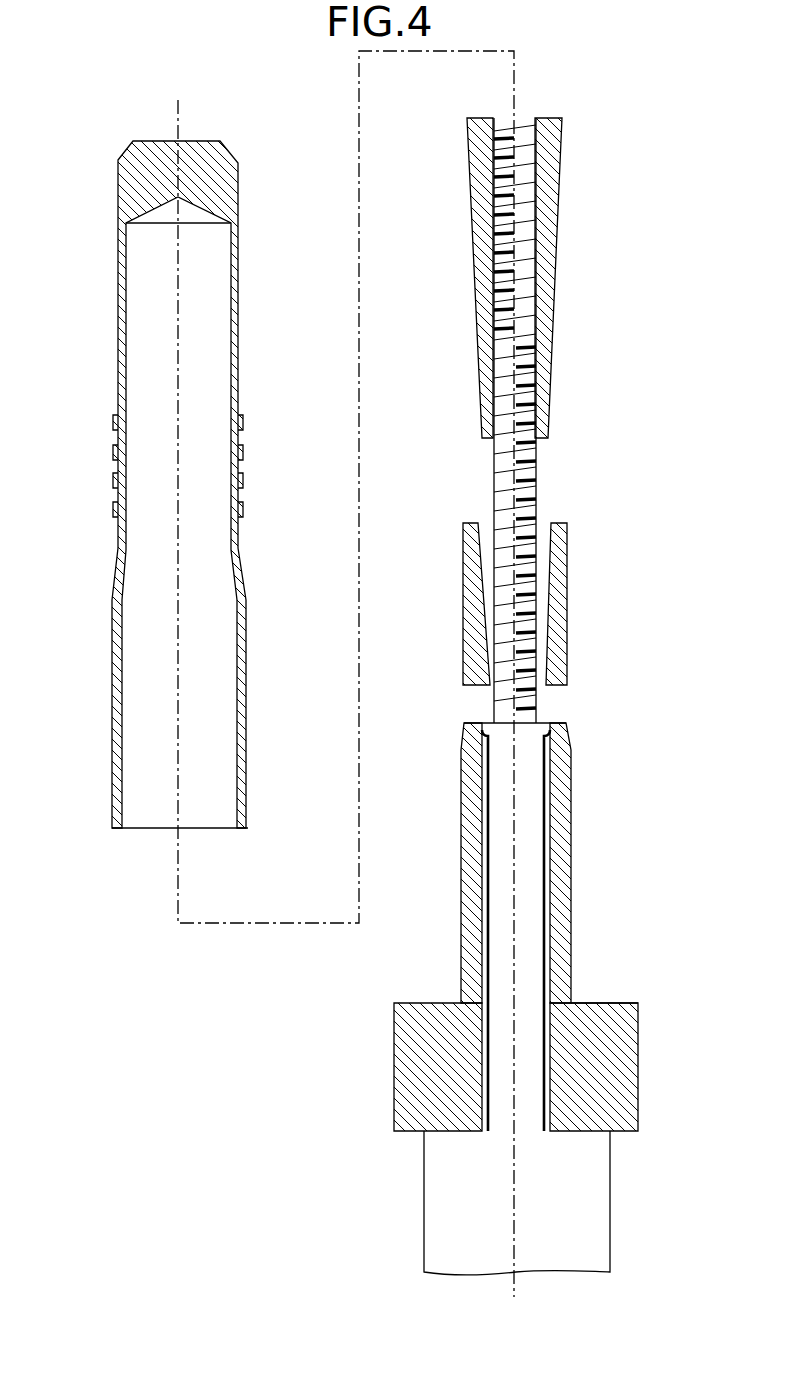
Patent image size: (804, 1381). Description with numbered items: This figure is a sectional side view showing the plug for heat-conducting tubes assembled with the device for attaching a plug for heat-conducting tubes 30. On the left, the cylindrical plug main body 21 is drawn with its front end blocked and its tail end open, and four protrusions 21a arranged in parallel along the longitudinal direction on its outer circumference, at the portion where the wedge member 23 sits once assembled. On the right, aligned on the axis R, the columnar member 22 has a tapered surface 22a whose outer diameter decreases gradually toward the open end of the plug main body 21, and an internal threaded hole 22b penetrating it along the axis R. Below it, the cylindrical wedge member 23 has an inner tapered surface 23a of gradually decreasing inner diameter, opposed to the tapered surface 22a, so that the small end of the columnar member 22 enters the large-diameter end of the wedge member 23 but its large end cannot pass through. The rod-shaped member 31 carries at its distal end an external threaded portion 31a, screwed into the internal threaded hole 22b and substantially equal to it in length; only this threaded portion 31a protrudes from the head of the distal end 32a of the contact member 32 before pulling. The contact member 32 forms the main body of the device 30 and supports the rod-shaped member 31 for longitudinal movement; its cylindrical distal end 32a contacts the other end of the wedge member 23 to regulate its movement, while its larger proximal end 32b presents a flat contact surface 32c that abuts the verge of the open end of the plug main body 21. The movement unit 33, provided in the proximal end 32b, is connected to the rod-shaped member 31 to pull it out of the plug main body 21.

The plug main body 21 is at (194, 484).
The protrusions 21a is at (113, 476).
The columnar member 22 is at (583, 278).
The tapered surface 22a is at (556, 216).
The internal threaded hole 22b is at (538, 284).
The wedge member 23 is at (581, 604).
The tapered surface 23a is at (546, 610).
The device for attaching a plug for heat-conducting tubes 30 is at (560, 963).
The rod-shaped member 31 is at (540, 790).
The external threaded portion 31a is at (536, 475).
The contact member 32 is at (560, 927).
The distal end 32a is at (563, 838).
The proximal end 32b is at (630, 1068).
The flat contact surface 32c is at (607, 1003).
The movement unit 33 is at (600, 1200).
The axis R is at (514, 72).